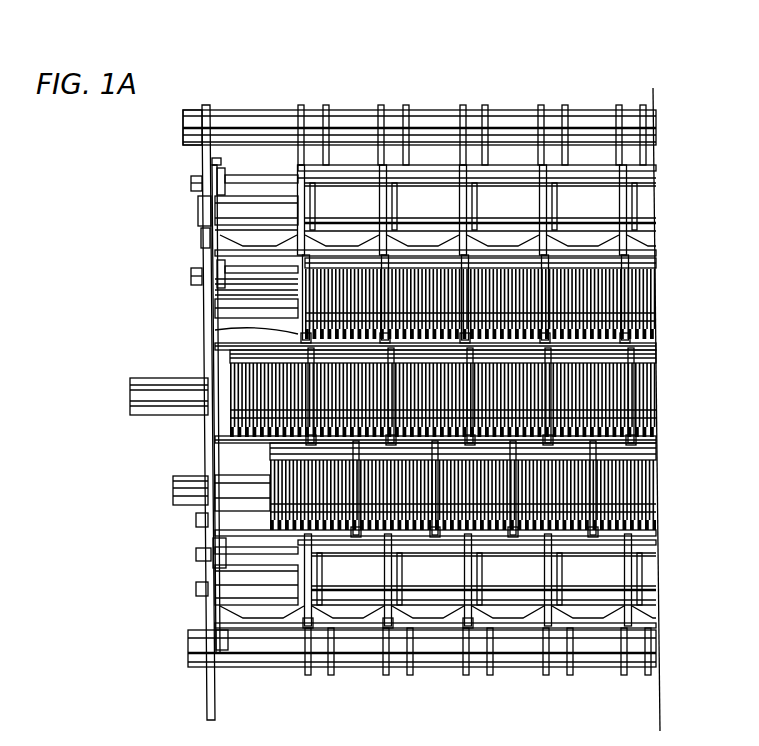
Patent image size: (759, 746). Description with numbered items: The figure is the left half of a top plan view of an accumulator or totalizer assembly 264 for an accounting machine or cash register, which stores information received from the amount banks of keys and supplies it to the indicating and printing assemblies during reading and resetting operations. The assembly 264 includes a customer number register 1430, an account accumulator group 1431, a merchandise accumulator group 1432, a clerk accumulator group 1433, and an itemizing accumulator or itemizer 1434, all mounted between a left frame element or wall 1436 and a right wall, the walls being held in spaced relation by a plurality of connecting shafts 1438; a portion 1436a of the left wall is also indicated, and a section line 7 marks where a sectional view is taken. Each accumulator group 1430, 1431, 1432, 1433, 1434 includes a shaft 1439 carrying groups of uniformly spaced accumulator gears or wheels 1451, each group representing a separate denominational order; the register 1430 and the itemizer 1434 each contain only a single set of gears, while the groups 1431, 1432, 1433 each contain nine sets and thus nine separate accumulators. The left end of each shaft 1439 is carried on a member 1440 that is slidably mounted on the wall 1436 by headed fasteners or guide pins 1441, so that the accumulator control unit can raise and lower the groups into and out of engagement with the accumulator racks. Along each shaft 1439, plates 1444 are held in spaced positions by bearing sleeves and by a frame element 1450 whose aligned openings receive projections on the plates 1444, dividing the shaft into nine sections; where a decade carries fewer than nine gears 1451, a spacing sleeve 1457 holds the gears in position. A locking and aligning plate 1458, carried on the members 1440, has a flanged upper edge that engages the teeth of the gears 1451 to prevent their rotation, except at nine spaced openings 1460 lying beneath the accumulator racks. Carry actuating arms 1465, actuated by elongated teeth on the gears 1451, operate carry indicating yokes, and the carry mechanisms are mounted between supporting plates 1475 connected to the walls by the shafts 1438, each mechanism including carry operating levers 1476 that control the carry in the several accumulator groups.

The accumulator assembly 264 is at (225, 67).
The section line 7- 7 is at (632, 80).
The customer number register 1430 is at (90, 200).
The account accumulator group 1431 is at (90, 284).
The merchandise accumulator group 1432 is at (92, 388).
The clerk accumulator group 1433 is at (98, 470).
The itemizing accumulator 1434 is at (98, 560).
The left frame element 1436 is at (197, 663).
The support plate portion 1436a is at (197, 420).
The connecting shaft 1438 is at (180, 120).
The shaft 1439 is at (193, 200).
The member 1440 is at (195, 228).
The guide pin 1441 is at (205, 167).
The plate 1444 is at (197, 332).
The frame element 1450 is at (336, 162).
The accumulator gear 1451 is at (457, 603).
The spacing sleeve 1457 is at (532, 580).
The locking and aligning plate 1458 is at (337, 610).
The opening 1460 is at (305, 617).
The carry actuating arm 1465 is at (418, 168).
The supporting plate 1475 is at (318, 97).
The carry operating lever 1476 is at (291, 99).